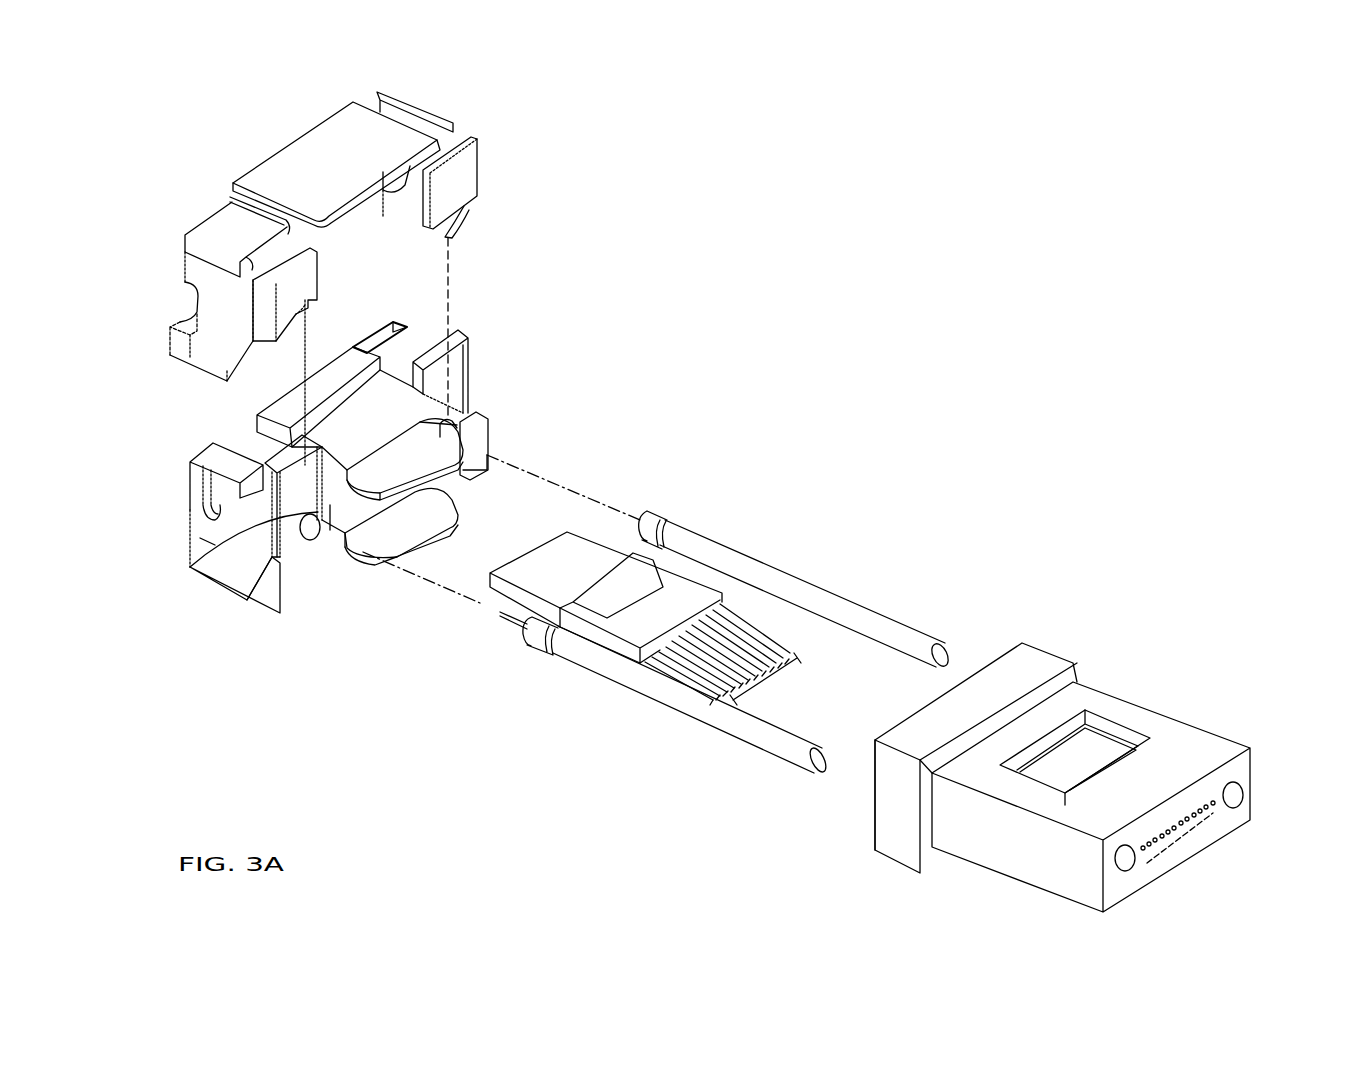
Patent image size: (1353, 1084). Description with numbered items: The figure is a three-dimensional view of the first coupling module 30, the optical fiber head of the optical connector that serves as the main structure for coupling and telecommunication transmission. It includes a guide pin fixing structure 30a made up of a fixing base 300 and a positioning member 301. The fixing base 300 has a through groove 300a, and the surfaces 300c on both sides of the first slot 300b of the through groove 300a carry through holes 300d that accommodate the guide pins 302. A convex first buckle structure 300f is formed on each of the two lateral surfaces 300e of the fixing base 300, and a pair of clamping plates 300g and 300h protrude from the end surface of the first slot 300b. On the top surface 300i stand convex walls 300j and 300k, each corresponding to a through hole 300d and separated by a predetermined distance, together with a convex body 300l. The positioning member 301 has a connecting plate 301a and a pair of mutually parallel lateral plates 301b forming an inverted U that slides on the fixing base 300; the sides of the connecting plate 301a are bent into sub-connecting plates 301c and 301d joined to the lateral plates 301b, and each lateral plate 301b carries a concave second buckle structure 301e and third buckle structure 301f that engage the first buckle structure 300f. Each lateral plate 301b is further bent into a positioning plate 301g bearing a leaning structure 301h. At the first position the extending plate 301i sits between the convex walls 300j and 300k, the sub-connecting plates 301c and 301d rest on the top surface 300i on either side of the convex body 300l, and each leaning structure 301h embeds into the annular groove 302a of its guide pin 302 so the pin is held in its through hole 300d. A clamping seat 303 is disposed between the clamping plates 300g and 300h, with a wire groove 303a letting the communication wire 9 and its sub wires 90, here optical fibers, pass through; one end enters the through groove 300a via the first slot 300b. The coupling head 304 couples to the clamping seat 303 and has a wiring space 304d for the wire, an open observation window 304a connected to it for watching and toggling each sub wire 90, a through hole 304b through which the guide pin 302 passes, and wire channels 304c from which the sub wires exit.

The first coupling module 30 is at (158, 148).
The guide pin fixing structure 30a is at (541, 258).
The positioning member 301 is at (450, 234).
The connecting plate 301a is at (340, 122).
The lateral plates 301b is at (467, 134).
The sub-connecting plate 301c is at (428, 113).
The sub-connecting plate 301d is at (220, 222).
The second buckle structure 301e is at (190, 294).
The third buckle structure 301f is at (188, 323).
The positioning plate 301g is at (463, 172).
The leaning structure 301h is at (456, 208).
The extending plate 301i is at (357, 196).
The fixing base 300 is at (468, 336).
The through groove 300a is at (385, 523).
The first slot 300b is at (327, 513).
The surfaces 300c is at (292, 540).
The through holes 300d is at (190, 567).
The lateral surfaces 300e is at (207, 540).
The first buckle structure 300f is at (198, 512).
The clamping plate 300g is at (465, 474).
The clamping plate 300h is at (465, 512).
The top surface 300i is at (384, 428).
The convex wall 300j is at (470, 345).
The convex wall 300k is at (207, 462).
The convex body 300l is at (357, 345).
The guide pin 302 is at (700, 531).
The annular groove 302a is at (550, 648).
The clamping seat 303 is at (580, 550).
The wire groove 303a is at (716, 608).
The sub wires 90 is at (772, 652).
The communication wire 9 is at (765, 679).
The coupling head 304 is at (1110, 705).
The observation window 304a is at (1130, 735).
The through hole 304b is at (1243, 800).
The wire channels 304c is at (1183, 842).
The wiring space 304d is at (1053, 765).